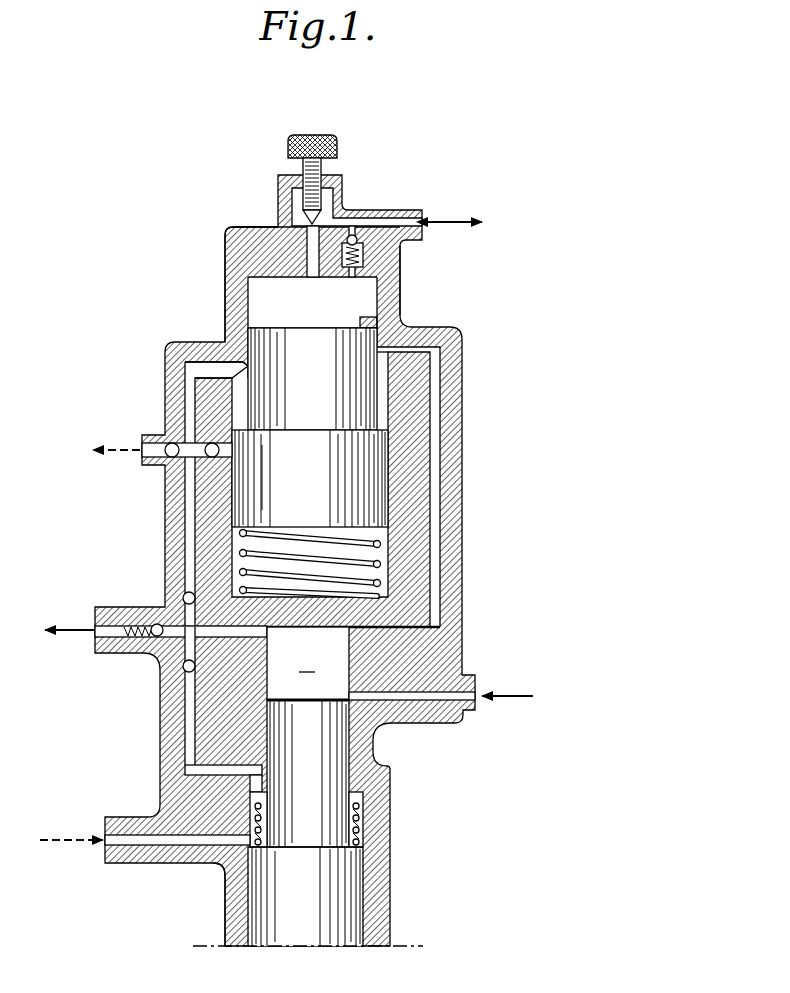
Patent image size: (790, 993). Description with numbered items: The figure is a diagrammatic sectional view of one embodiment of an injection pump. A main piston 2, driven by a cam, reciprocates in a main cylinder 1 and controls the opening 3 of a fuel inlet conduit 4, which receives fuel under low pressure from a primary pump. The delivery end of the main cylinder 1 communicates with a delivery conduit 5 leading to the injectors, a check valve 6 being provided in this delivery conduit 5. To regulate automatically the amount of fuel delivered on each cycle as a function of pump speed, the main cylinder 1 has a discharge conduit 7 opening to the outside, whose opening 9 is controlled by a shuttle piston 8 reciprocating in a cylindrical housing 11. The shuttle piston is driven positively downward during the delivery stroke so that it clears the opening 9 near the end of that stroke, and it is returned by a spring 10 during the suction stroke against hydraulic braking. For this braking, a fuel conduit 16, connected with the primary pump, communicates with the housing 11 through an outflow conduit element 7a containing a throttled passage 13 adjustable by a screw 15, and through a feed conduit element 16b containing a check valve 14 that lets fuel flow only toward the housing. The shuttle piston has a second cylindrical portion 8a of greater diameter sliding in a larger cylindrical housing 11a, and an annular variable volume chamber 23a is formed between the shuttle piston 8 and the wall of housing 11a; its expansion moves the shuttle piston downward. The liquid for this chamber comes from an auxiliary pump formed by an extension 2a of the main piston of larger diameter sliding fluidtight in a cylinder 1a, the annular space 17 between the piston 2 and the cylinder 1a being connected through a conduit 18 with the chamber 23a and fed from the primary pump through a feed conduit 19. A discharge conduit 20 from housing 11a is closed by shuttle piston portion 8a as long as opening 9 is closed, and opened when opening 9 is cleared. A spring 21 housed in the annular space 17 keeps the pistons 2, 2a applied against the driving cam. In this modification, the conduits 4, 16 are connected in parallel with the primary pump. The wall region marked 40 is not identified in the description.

The main cylinder 1 is at (308, 663).
The cylinder 1a is at (362, 822).
The main piston 2 is at (318, 766).
The extension 2a is at (338, 884).
The opening 3 is at (351, 695).
The fuel inlet conduit 4 is at (450, 692).
The delivery conduit 5 is at (217, 632).
The check valve 6 is at (153, 623).
The discharge conduit 7 is at (432, 510).
The outflow conduit element 7a is at (312, 248).
The shuttle piston 8 is at (283, 355).
The shuttle piston portion 8a is at (272, 494).
The opening 9 is at (412, 324).
The spring 10 is at (243, 553).
The cylindrical housing 11 is at (262, 299).
The cylindrical housing 11a is at (240, 398).
The throttled passage 13 is at (306, 228).
The check valve 14 is at (356, 227).
The screw 15 is at (302, 172).
The fuel conduit 16 is at (408, 227).
The feed conduit element 16b is at (355, 235).
The annular space 17 is at (223, 867).
The conduit 18 is at (190, 712).
The feed conduit 19 is at (138, 840).
The discharge conduit 20 is at (152, 447).
The spring 21 is at (365, 812).
The annular variable volume chamber 23a is at (385, 398).
The body side wall 40 is at (402, 284).